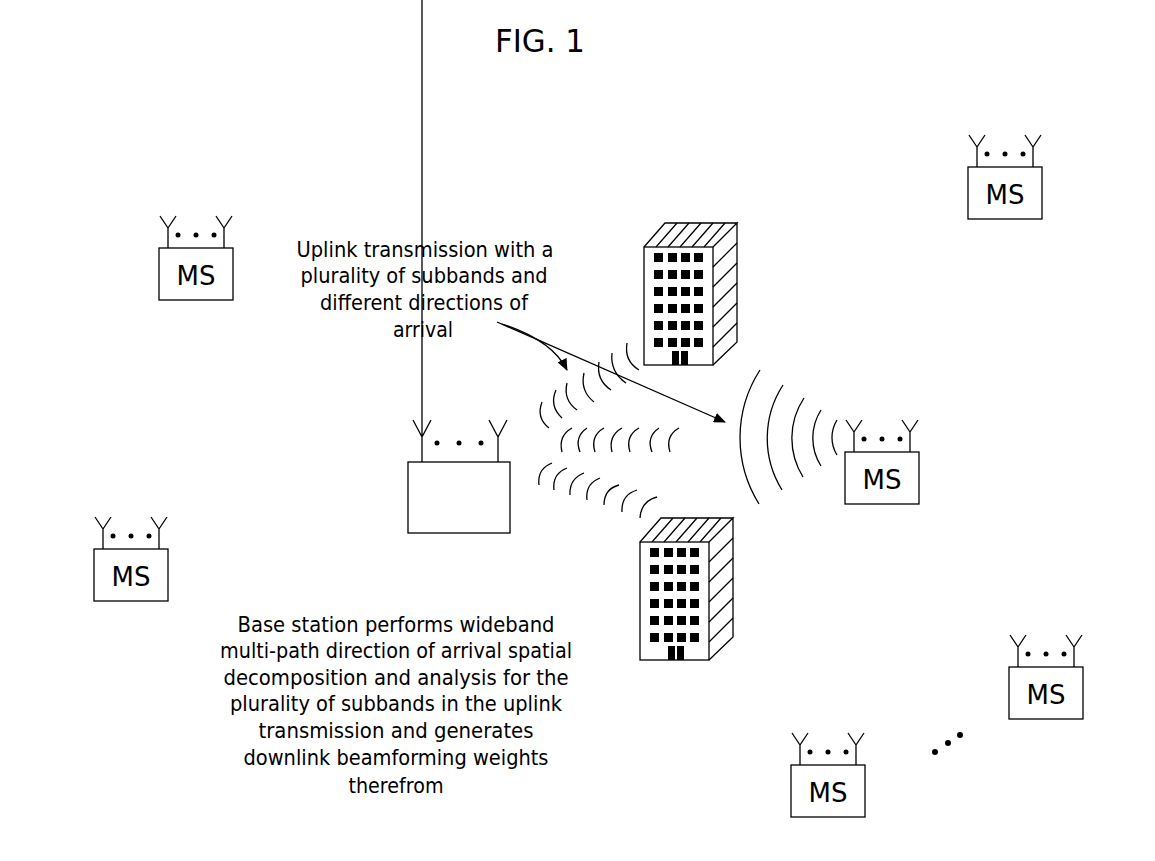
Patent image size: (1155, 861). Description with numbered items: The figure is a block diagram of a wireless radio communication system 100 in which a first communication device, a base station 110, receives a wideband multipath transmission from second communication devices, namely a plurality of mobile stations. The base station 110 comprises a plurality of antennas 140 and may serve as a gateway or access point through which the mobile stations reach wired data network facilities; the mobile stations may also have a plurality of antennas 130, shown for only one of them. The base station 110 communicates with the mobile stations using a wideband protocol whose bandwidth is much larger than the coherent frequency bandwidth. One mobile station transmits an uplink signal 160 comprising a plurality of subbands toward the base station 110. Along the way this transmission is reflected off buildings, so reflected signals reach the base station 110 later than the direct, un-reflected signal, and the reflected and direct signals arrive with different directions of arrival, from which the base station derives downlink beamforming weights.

The wireless radio communication system 100 is at (123, 160).
The base station 110 is at (438, 280).
The antennas 130 is at (1047, 127).
The antennas 140 is at (402, 417).
The uplink signal 160 is at (803, 382).